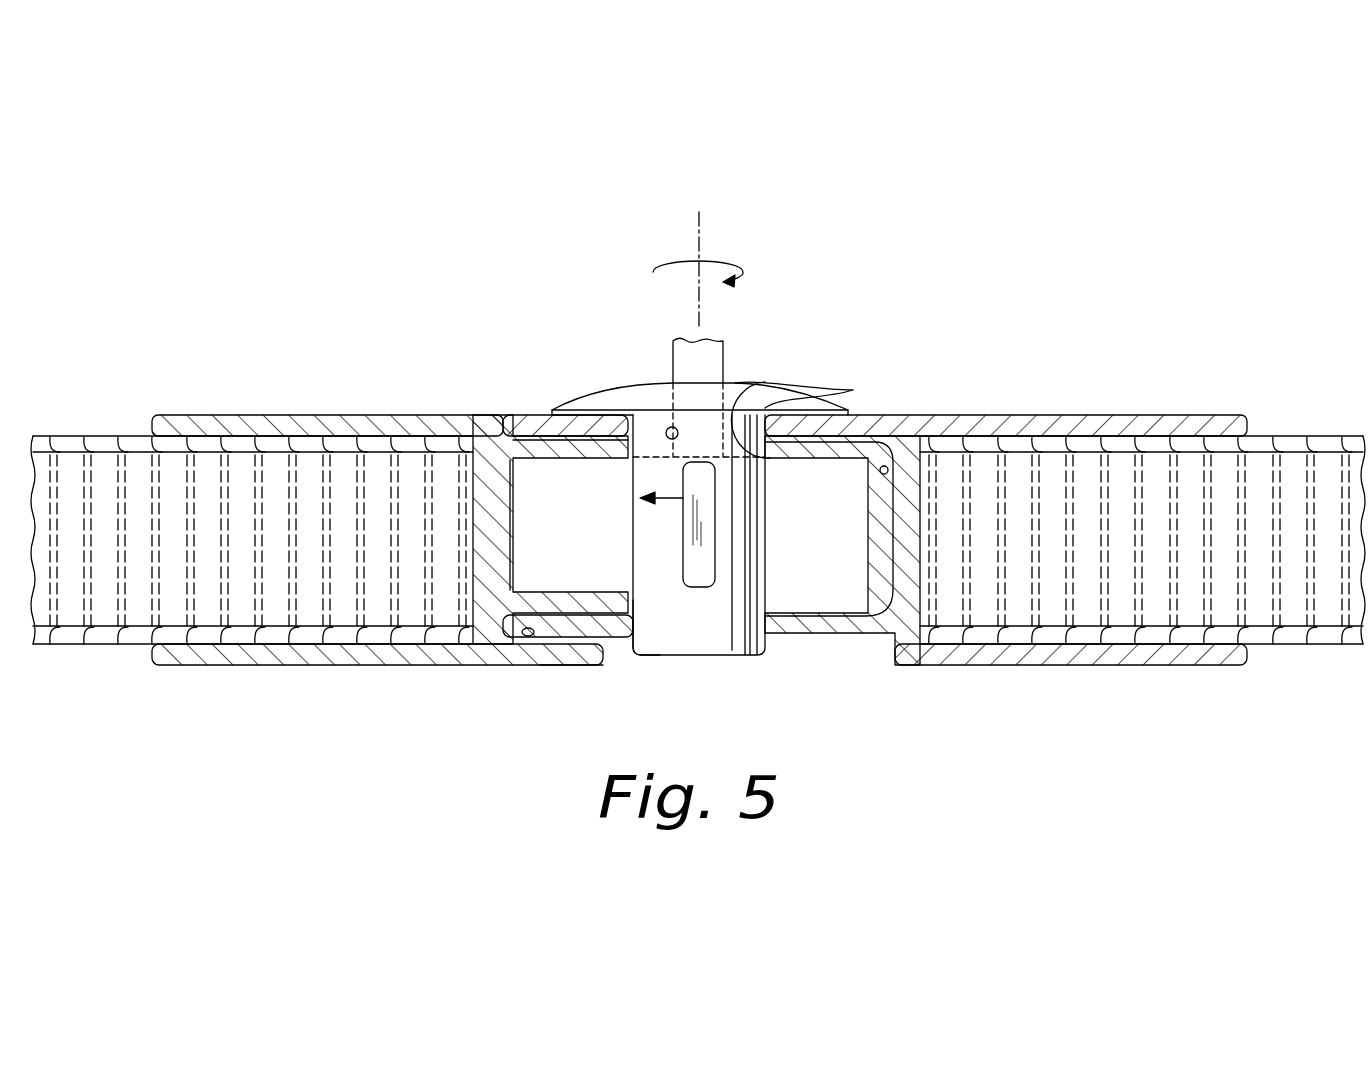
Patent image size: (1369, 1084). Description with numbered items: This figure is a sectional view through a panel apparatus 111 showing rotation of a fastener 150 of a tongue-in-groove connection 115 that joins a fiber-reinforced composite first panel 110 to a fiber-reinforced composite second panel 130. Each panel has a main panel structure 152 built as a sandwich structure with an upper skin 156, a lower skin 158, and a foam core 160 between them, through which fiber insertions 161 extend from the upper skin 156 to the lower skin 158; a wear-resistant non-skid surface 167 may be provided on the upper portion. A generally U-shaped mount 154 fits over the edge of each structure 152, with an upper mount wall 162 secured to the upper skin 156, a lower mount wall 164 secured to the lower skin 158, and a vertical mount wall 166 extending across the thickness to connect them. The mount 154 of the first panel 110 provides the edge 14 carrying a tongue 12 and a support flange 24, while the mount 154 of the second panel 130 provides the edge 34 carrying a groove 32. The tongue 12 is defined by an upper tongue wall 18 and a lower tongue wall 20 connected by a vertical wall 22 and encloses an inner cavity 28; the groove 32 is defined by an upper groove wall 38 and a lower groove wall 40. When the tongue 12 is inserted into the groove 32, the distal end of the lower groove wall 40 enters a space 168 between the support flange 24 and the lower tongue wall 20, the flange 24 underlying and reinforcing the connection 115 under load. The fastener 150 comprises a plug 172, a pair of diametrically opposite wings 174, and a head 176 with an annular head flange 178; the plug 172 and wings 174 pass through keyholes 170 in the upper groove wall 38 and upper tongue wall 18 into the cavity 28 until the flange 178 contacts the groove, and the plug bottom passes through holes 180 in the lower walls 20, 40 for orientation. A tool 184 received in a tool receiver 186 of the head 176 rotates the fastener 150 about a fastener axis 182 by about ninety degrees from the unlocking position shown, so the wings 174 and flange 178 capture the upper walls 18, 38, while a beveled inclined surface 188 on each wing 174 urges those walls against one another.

The tongue 12 is at (848, 535).
The edge 14 is at (546, 567).
The upper tongue wall 18 is at (538, 456).
The lower tongue wall 20 is at (592, 592).
The vertical wall 22 is at (868, 505).
The support flange 24 is at (562, 666).
The inner cavity 28 is at (805, 460).
The groove 32 is at (534, 569).
The edge 34 is at (908, 434).
The upper groove wall 38 is at (542, 416).
The lower groove wall 40 is at (610, 638).
The first panel 110 is at (118, 420).
The panel apparatus 111 is at (860, 443).
The tongue-in-groove connection 115 is at (848, 501).
The second panel 130 is at (1277, 425).
The fastener 150 is at (720, 460).
The main panel structure 152 is at (697, 521).
The mount 154 is at (699, 539).
The upper skin 156 is at (60, 435).
The lower skin 158 is at (60, 646).
The core 160 is at (1293, 600).
The fiber insertions 161 is at (265, 573).
The upper mount wall 162 is at (412, 415).
The lower mount wall 164 is at (398, 667).
The vertical mount wall 166 is at (503, 560).
The non-skid surface 167 is at (90, 435).
The space 168 is at (528, 638).
The keyholes 170 is at (853, 390).
The plug 172 is at (670, 656).
The wings 174 is at (703, 588).
The head 176 is at (633, 397).
The head flange 178 is at (587, 400).
The holes 180 is at (633, 614).
The fastener axis 182 is at (703, 240).
The tool 184 is at (708, 352).
The tool receiver 186 is at (672, 427).
The inclined surface 188 is at (690, 456).